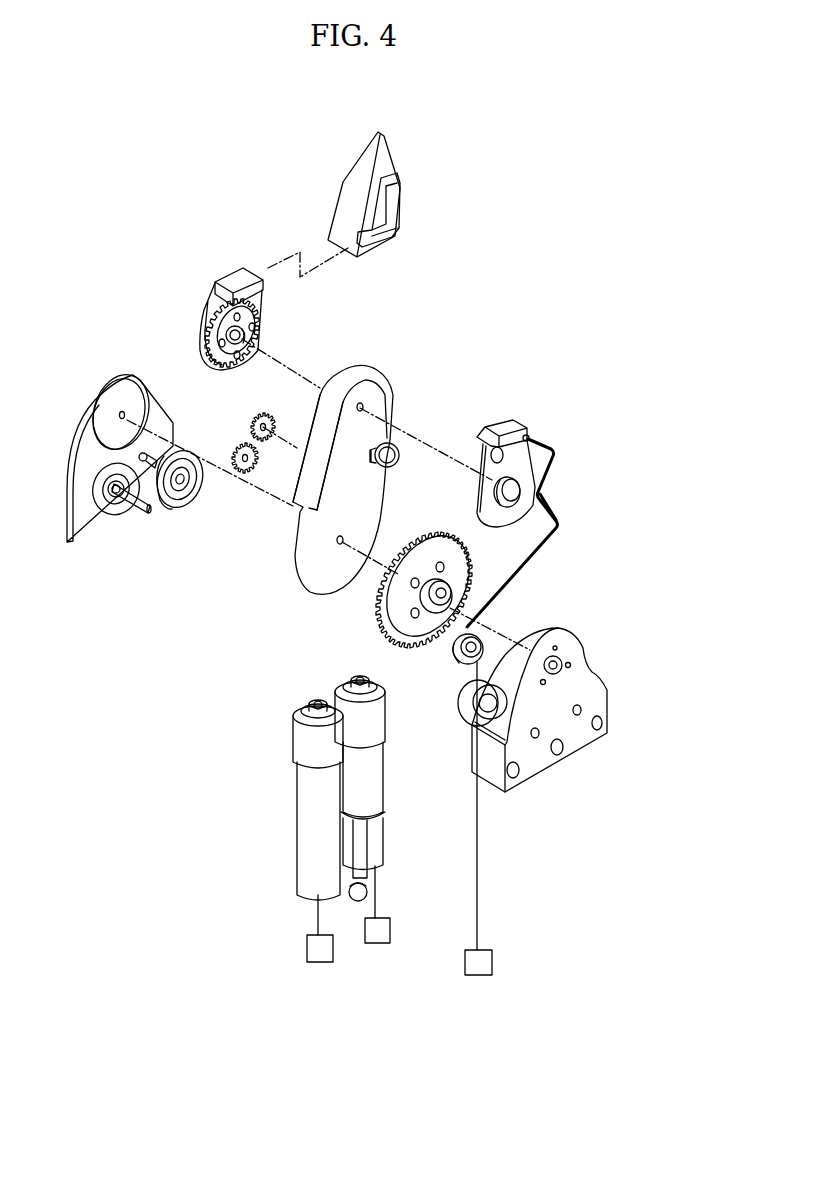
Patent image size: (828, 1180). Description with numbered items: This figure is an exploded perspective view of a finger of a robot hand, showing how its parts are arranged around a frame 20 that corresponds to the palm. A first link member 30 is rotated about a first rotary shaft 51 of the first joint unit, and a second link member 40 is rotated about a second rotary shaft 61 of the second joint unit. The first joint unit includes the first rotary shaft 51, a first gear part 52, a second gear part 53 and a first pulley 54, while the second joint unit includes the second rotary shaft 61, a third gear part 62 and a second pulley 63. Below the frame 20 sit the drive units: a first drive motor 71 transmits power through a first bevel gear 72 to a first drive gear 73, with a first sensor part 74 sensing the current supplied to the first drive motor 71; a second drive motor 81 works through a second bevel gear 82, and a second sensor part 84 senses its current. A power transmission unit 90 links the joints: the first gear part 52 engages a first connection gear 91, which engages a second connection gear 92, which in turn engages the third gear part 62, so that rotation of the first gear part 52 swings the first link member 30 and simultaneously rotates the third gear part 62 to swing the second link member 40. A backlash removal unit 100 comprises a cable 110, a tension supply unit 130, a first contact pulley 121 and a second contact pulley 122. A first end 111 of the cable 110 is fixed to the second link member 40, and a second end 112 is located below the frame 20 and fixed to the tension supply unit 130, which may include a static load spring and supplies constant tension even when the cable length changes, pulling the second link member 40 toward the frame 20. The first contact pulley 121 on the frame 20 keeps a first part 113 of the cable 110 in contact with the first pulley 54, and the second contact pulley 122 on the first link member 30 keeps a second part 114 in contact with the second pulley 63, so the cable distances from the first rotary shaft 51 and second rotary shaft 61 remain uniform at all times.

The frame 20 is at (597, 693).
The first link member 30 is at (310, 587).
The second link member 40 is at (345, 213).
The first rotary shaft 51 is at (395, 642).
The first gear part 52 is at (292, 550).
The second gear part 53 is at (390, 623).
The first pulley 54 is at (470, 570).
The second rotary shaft 61 is at (238, 337).
The third gear part 62 is at (250, 317).
The second pulley 63 is at (483, 500).
The first drive motor 71 is at (303, 805).
The first bevel gear 72 is at (112, 503).
The first drive gear 73 is at (117, 507).
The first sensor part 74 is at (310, 947).
The second drive motor 81 is at (373, 768).
The second bevel gear 82 is at (177, 503).
The second sensor part 84 is at (382, 933).
The power transmission unit 90 is at (213, 394).
The first connection gear 91 is at (235, 450).
The second connection gear 92 is at (255, 420).
The backlash removal unit 100 is at (585, 520).
The cable 110 is at (550, 545).
The first end 111 is at (529, 437).
The second end 112 is at (480, 952).
The first part 113 is at (543, 497).
The second part 114 is at (485, 628).
The first contact pulley 121 is at (460, 667).
The second contact pulley 122 is at (392, 444).
The tension supply unit 130 is at (487, 962).